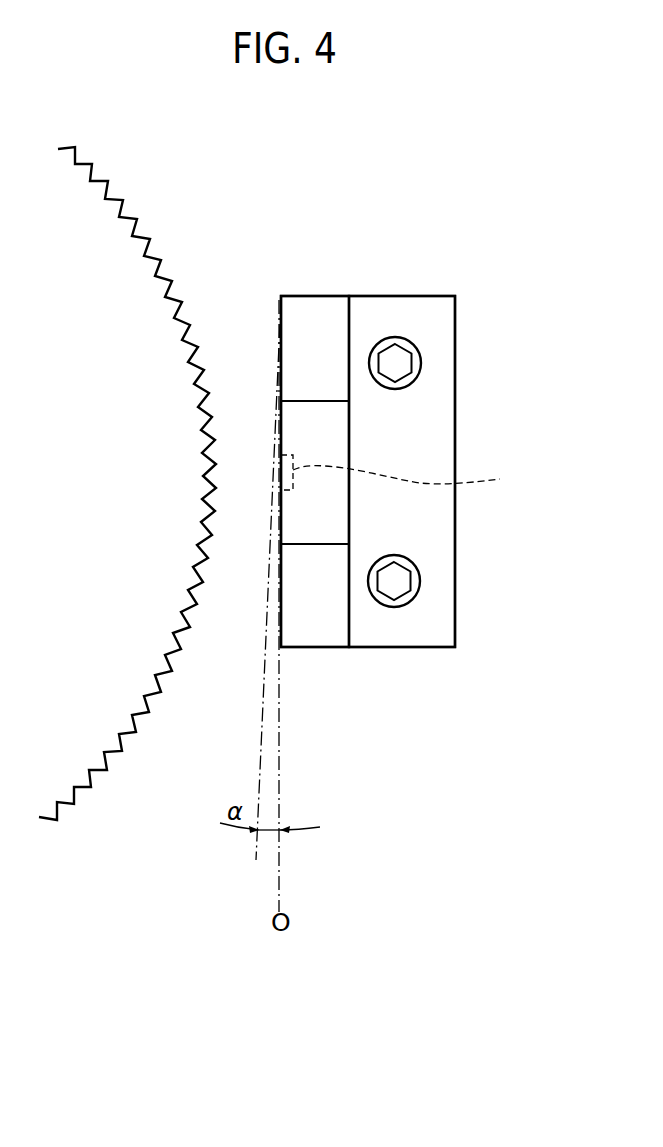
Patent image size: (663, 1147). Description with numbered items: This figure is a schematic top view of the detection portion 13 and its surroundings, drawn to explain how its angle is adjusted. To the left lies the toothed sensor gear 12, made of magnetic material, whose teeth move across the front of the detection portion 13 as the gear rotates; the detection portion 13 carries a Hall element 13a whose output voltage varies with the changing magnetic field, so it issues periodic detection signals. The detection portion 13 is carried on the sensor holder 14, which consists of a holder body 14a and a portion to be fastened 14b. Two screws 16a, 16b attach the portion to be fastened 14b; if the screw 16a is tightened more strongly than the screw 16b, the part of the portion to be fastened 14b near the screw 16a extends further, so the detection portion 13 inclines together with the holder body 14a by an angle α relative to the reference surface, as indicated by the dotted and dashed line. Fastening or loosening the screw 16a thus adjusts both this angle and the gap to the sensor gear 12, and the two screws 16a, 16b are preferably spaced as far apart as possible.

The sensor gear 12 is at (80, 230).
The detection portion 13 is at (303, 420).
The Hall element 13a is at (409, 475).
The sensor holder 14 is at (510, 752).
The holder body 14a is at (320, 628).
The portion to be fastened 14b is at (388, 623).
The screw 16a is at (420, 578).
The screw 16b is at (421, 358).